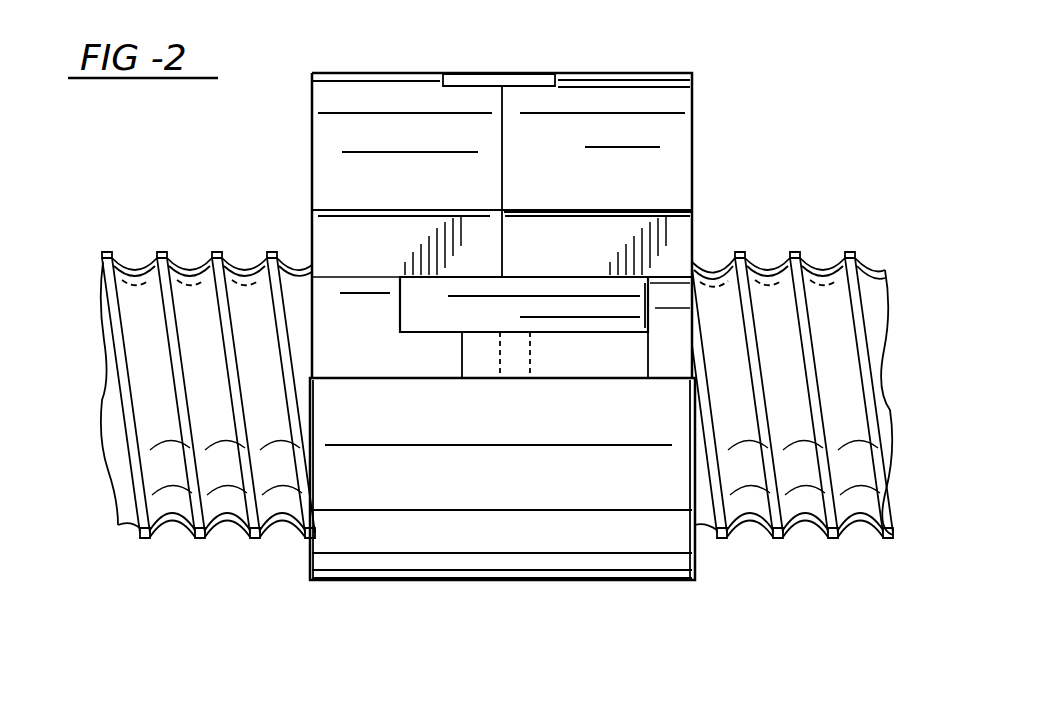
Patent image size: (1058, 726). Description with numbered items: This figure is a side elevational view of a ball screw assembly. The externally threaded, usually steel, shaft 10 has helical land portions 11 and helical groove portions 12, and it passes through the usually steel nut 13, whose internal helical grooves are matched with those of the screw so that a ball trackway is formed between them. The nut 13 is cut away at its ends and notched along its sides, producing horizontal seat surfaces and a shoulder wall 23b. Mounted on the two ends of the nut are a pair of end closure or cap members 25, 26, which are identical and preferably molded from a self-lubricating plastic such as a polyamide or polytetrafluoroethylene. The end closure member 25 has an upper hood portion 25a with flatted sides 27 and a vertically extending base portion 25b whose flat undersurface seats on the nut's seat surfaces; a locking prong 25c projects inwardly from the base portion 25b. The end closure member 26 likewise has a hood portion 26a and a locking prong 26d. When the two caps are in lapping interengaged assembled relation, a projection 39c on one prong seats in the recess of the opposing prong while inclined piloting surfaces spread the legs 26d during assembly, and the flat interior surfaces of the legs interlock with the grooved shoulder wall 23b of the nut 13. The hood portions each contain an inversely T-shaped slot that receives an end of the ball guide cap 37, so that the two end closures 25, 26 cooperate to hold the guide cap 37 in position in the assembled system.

The shaft 10 is at (125, 500).
The helical land portions 11 is at (255, 540).
The helical groove portions 12 is at (805, 527).
The nut 13 is at (635, 308).
The shoulder wall 23b is at (343, 277).
The end closure member 25 is at (298, 182).
The hood portion 25a is at (310, 128).
The base portion 25b is at (372, 349).
The locking prong 25c is at (428, 378).
The end closure member 26 is at (707, 178).
The hood portion 26a is at (690, 122).
The locking prong 26d is at (605, 378).
The flatted sides 27 is at (683, 222).
The ball guide cap 37 is at (546, 73).
The projection 39c is at (497, 378).